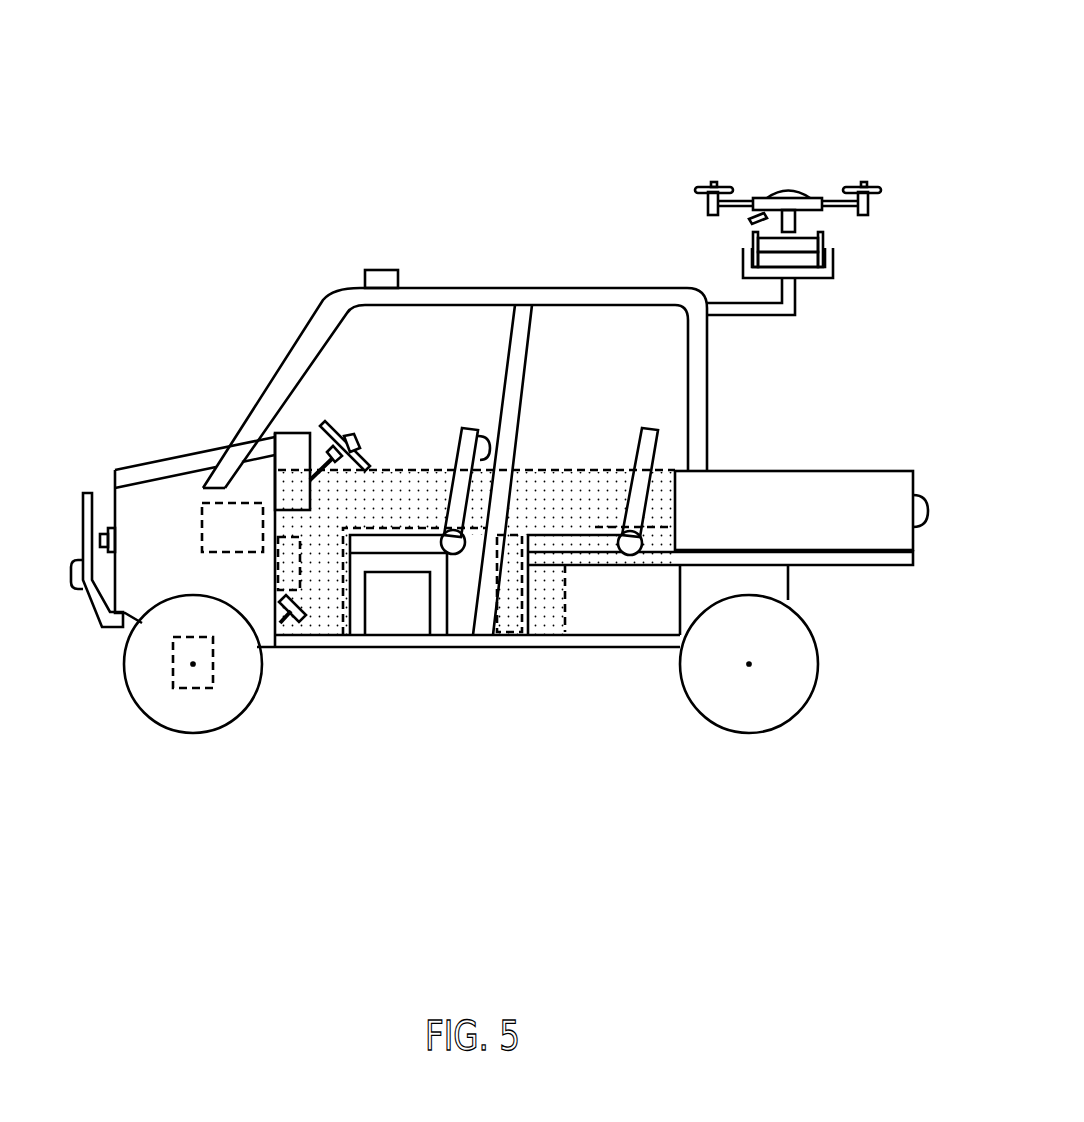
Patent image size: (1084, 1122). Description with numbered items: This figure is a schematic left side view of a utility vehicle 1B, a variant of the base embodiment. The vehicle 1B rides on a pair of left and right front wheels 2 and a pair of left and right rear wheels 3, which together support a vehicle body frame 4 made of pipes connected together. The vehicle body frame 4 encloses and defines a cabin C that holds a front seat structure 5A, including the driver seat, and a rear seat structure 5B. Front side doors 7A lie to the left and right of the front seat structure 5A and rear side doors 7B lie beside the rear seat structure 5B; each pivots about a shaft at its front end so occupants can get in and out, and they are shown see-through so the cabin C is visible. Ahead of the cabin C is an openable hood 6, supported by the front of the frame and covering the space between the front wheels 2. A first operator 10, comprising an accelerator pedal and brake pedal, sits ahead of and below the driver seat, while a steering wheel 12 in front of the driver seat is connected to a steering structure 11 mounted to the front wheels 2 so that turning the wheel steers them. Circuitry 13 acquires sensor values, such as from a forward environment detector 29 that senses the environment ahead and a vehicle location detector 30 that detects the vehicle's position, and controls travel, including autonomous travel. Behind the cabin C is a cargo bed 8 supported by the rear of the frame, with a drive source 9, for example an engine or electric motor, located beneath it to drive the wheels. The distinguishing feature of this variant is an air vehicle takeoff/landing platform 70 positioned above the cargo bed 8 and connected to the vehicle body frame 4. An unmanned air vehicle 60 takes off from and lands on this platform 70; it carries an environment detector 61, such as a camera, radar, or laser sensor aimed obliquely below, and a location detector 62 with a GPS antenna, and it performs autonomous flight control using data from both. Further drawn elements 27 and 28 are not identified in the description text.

The utility vehicle 1B is at (583, 100).
The front wheels 2 is at (233, 702).
The rear wheels 3 is at (785, 703).
The vehicle body frame 4 is at (703, 387).
The front seat structure 5A is at (430, 545).
The rear seat structure 5B is at (607, 545).
The hood 6 is at (162, 470).
The front side doors 7A is at (326, 620).
The rear side doors 7B is at (510, 630).
The cargo bed 8 is at (805, 487).
The drive source 9 is at (772, 583).
The first operator 10 is at (292, 627).
The steering structure 11 is at (173, 678).
The steering wheel 12 is at (336, 423).
The circuitry 13 is at (202, 530).
The instrument panel 27 is at (297, 447).
The front bumper 28 is at (86, 493).
The forward environment detector 29 is at (104, 527).
The vehicle location detector 30 is at (382, 268).
The unmanned air vehicle 60 is at (820, 172).
The environment detector 61 is at (748, 218).
The location detector 62 is at (789, 193).
The air vehicle takeoff/landing platform 70 is at (835, 258).
The cabin C is at (582, 328).